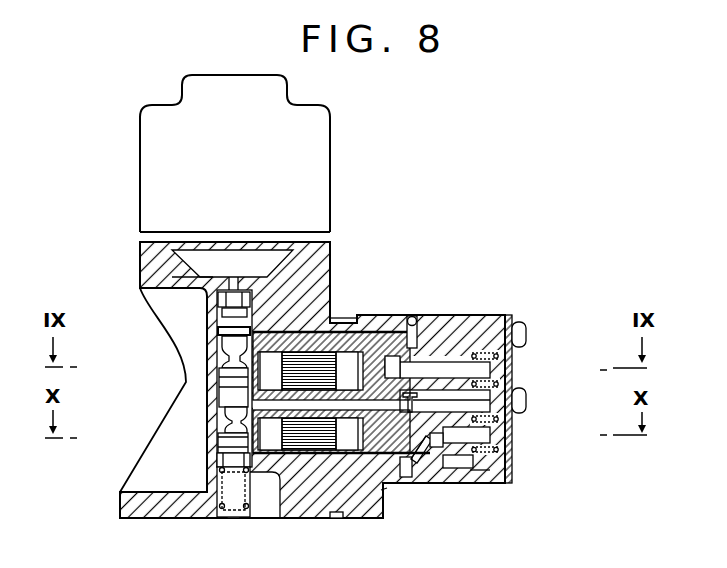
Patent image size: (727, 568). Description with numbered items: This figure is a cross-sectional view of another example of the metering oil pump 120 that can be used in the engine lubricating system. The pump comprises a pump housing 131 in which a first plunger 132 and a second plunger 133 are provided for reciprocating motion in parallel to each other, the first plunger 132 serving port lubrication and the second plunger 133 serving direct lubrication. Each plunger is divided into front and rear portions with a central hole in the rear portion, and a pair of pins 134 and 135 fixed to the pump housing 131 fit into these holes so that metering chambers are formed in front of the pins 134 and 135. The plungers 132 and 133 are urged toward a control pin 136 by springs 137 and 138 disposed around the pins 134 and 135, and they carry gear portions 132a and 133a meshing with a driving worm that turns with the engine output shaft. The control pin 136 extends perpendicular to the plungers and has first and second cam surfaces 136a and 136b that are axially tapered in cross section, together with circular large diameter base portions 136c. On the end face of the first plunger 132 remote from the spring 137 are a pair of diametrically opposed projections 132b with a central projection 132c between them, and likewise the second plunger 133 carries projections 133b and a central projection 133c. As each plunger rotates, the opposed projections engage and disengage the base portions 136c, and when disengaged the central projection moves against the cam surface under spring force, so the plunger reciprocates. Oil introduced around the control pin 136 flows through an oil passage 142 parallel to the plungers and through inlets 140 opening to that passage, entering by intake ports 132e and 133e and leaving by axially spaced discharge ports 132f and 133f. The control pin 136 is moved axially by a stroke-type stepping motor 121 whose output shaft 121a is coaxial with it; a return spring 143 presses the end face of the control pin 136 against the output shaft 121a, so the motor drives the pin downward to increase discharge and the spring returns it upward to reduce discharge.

The metering oil pump 120 is at (432, 252).
The stepping motor 121 is at (313, 127).
The output shaft 121a is at (238, 277).
The pump housing 131 is at (393, 518).
The first plunger 132 is at (372, 338).
The gear portion 132a is at (328, 333).
The projections 132b is at (240, 343).
The central projection 132c is at (292, 372).
The intake port 132e is at (424, 340).
The discharge port 132f is at (386, 342).
The second plunger 133 is at (350, 443).
The gear portion 133a is at (305, 443).
The projections 133b is at (235, 450).
The central projection 133c is at (250, 447).
The intake port 133e is at (415, 465).
The discharge port 133f is at (442, 463).
The pin 134 is at (482, 372).
The pin 135 is at (483, 435).
The control pin 136 is at (214, 392).
The first cam surface 136a is at (232, 357).
The second cam surface 136b is at (232, 421).
The large diameter base portions 136c is at (253, 385).
The spring 137 is at (497, 345).
The spring 138 is at (463, 468).
The inlets 140 is at (520, 400).
The oil passage 142 is at (303, 372).
The return spring 143 is at (215, 495).